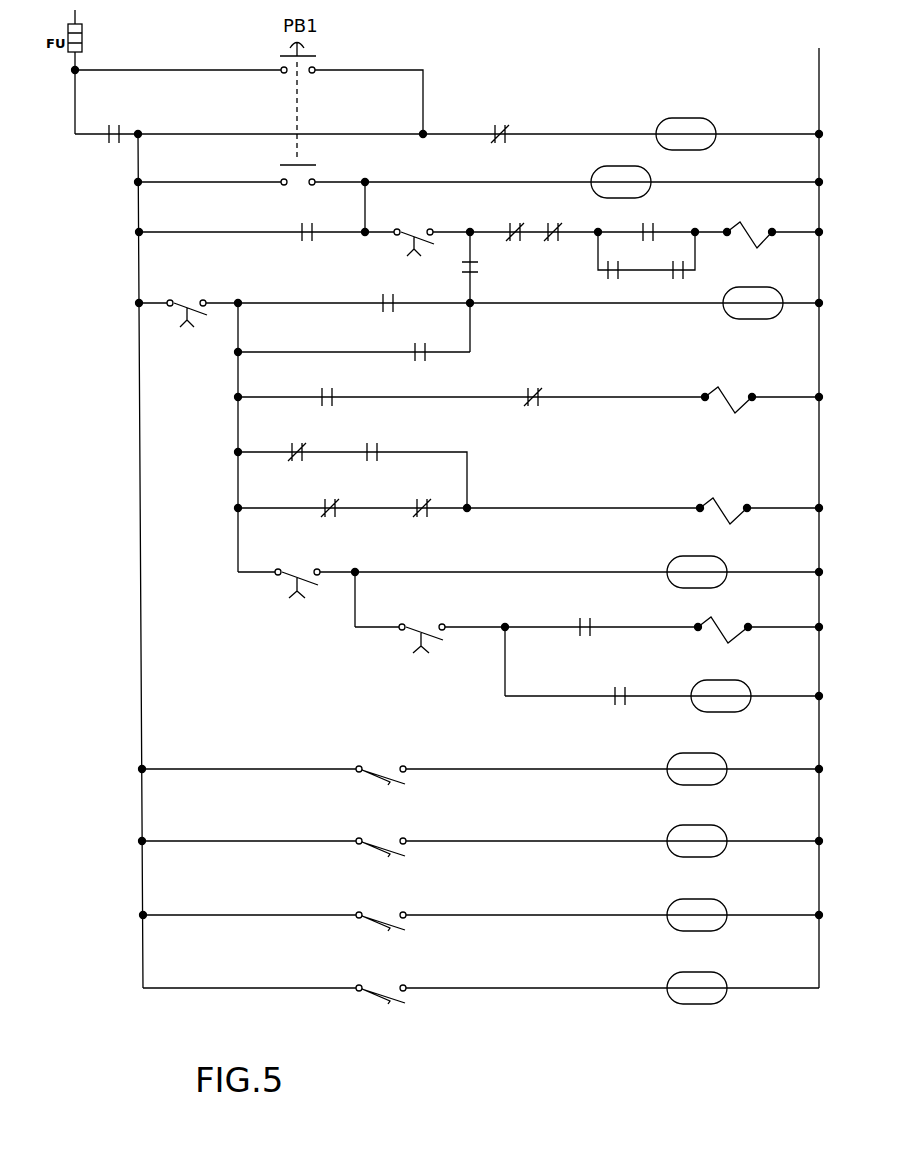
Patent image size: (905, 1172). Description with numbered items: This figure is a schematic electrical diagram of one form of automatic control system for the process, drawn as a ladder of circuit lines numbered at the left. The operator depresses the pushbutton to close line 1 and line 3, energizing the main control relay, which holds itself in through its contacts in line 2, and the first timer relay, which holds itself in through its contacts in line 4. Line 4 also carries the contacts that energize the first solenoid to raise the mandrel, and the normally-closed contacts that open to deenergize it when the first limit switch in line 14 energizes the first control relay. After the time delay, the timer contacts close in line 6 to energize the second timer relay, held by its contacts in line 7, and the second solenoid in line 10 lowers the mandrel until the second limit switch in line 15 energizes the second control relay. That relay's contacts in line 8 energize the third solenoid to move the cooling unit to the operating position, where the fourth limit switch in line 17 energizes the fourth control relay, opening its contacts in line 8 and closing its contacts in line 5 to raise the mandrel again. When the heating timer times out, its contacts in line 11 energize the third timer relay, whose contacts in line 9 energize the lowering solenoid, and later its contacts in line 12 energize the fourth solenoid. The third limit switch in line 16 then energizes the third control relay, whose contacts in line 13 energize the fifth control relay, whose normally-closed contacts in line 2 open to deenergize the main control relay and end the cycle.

The control circuit line 1 is at (236, 97).
The control circuit line 2 is at (436, 125).
The control circuit line 3 is at (436, 199).
The control circuit line 4 is at (436, 275).
The control circuit line 5 is at (373, 267).
The control circuit line 6 is at (436, 422).
The control circuit line 7 is at (260, 362).
The control circuit line 8 is at (436, 396).
The control circuit line 9 is at (258, 475).
The control circuit line 10 is at (435, 507).
The control circuit line 11 is at (436, 585).
The control circuit line 12 is at (436, 646).
The control circuit line 13 is at (436, 704).
The control circuit line 14 is at (436, 778).
The control circuit line 15 is at (436, 852).
The control circuit line 16 is at (436, 926).
The control circuit line 17 is at (435, 1000).